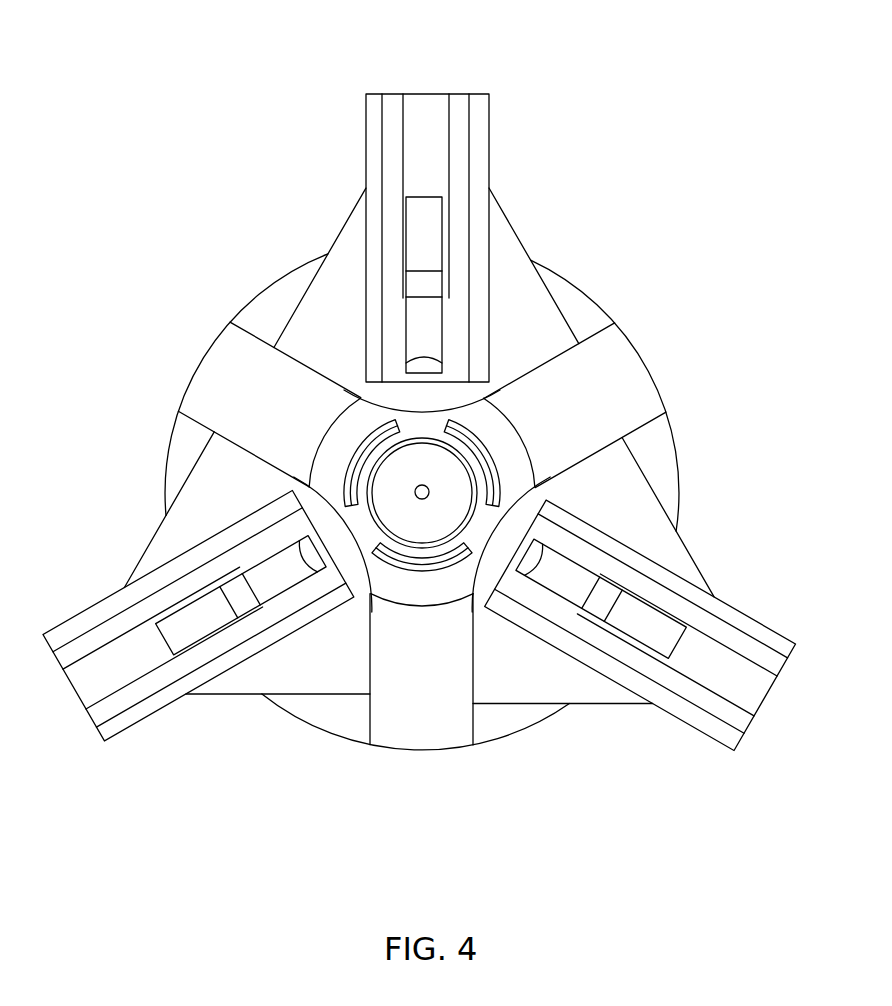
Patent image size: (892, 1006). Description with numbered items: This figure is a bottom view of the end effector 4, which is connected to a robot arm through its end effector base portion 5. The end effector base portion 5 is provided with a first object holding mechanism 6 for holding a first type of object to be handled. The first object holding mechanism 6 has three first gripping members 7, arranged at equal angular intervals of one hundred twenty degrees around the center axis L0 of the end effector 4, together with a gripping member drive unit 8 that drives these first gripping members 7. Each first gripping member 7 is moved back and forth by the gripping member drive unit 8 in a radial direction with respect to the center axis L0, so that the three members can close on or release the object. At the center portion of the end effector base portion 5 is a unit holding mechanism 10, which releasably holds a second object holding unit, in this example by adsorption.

The end effector 4 is at (725, 158).
The end effector base portion 5 is at (600, 307).
The first object holding mechanism 6 is at (419, 427).
The first gripping member 7 is at (432, 330).
The gripping member drive unit 8 is at (428, 103).
The unit holding mechanism 10 is at (410, 572).
The center axis L0 is at (430, 487).